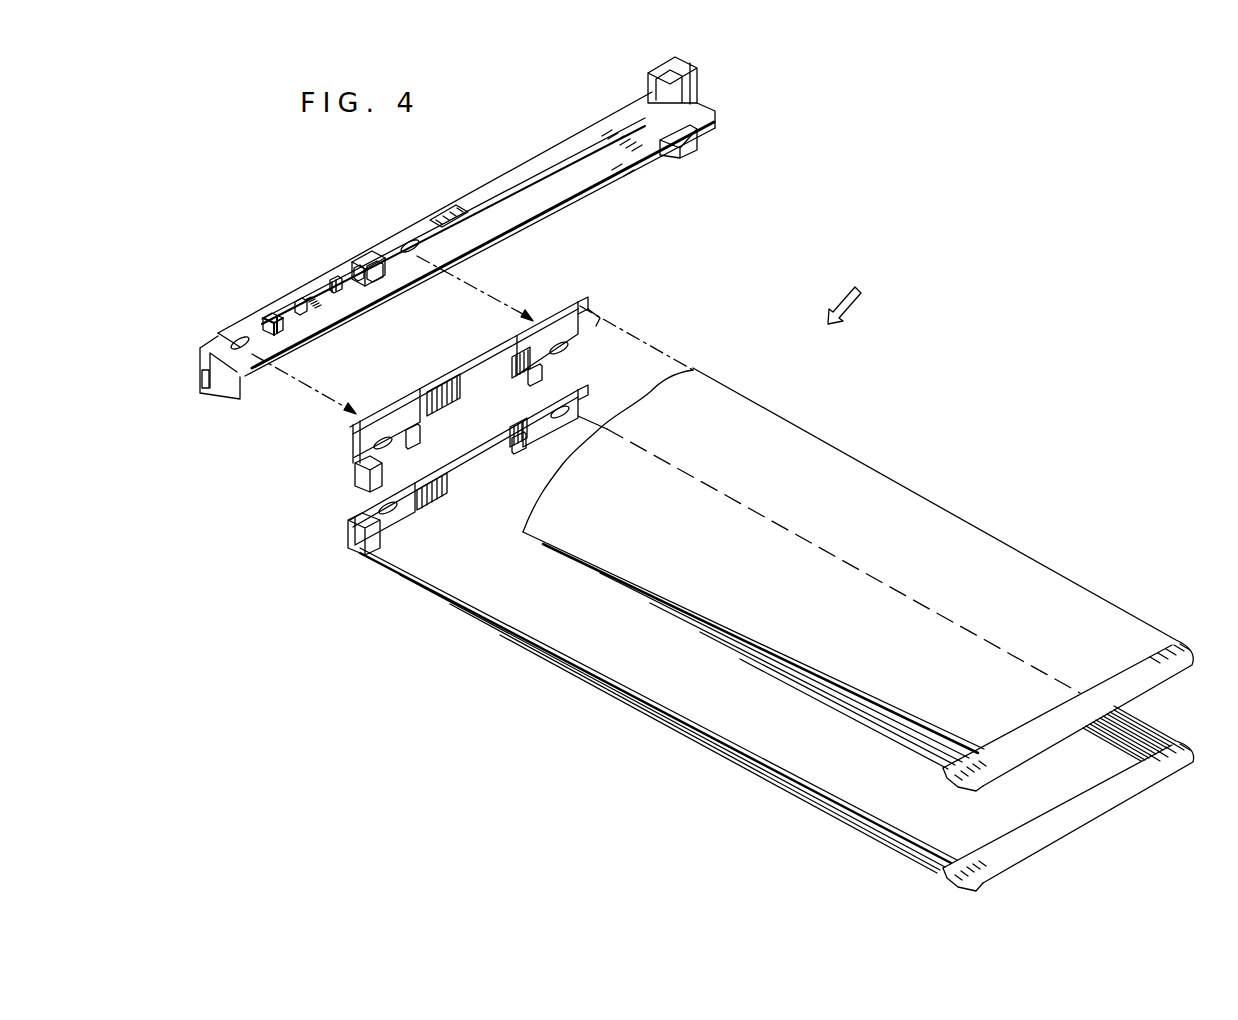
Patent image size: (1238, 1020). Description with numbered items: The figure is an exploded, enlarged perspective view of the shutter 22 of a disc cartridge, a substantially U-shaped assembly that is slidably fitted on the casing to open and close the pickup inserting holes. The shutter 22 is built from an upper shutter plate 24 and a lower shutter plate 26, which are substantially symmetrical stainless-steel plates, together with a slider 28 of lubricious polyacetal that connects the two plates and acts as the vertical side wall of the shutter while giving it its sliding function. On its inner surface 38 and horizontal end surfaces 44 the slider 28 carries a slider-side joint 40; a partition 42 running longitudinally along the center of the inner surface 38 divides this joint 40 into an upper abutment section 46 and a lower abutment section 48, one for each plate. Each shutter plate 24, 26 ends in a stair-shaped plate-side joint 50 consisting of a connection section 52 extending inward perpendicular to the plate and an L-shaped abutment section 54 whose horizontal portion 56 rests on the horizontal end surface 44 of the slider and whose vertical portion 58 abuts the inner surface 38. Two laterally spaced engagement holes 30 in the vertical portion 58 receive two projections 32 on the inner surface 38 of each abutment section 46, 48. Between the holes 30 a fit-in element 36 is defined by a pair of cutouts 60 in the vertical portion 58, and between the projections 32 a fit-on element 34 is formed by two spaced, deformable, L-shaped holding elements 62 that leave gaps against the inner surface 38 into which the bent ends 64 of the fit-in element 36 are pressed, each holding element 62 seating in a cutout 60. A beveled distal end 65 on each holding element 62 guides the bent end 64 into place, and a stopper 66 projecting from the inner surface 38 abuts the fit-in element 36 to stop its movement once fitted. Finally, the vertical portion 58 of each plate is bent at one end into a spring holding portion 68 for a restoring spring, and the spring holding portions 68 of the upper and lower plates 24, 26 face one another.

The shutter 22 is at (734, 318).
The upper shutter plate 24 is at (877, 471).
The lower shutter plate 26 is at (478, 621).
The slider 28 is at (451, 244).
The engagement holes 30 is at (459, 418).
The projections 32 is at (238, 336).
The fit-on element 34 is at (360, 255).
The fit-in element 36 is at (468, 394).
The inner surface 38 is at (255, 352).
The slider-side joint 40 is at (365, 242).
The partition 42 is at (466, 261).
The horizontal end surfaces 44 is at (300, 286).
The upper abutment section 46 is at (432, 220).
The lower abutment section 48 is at (210, 394).
The plate-side joint 50 is at (592, 346).
The connection section 52 is at (330, 537).
The L-shaped abutment section 54 is at (352, 452).
The horizontal portion 56 is at (590, 312).
The vertical portion 58 is at (614, 325).
The cutouts 60 is at (515, 345).
The holding elements 62 is at (265, 318).
The bent ends 64 is at (418, 436).
The beveled distal end 65 is at (370, 284).
The stopper 66 is at (322, 286).
The spring holding portion 68 is at (355, 482).